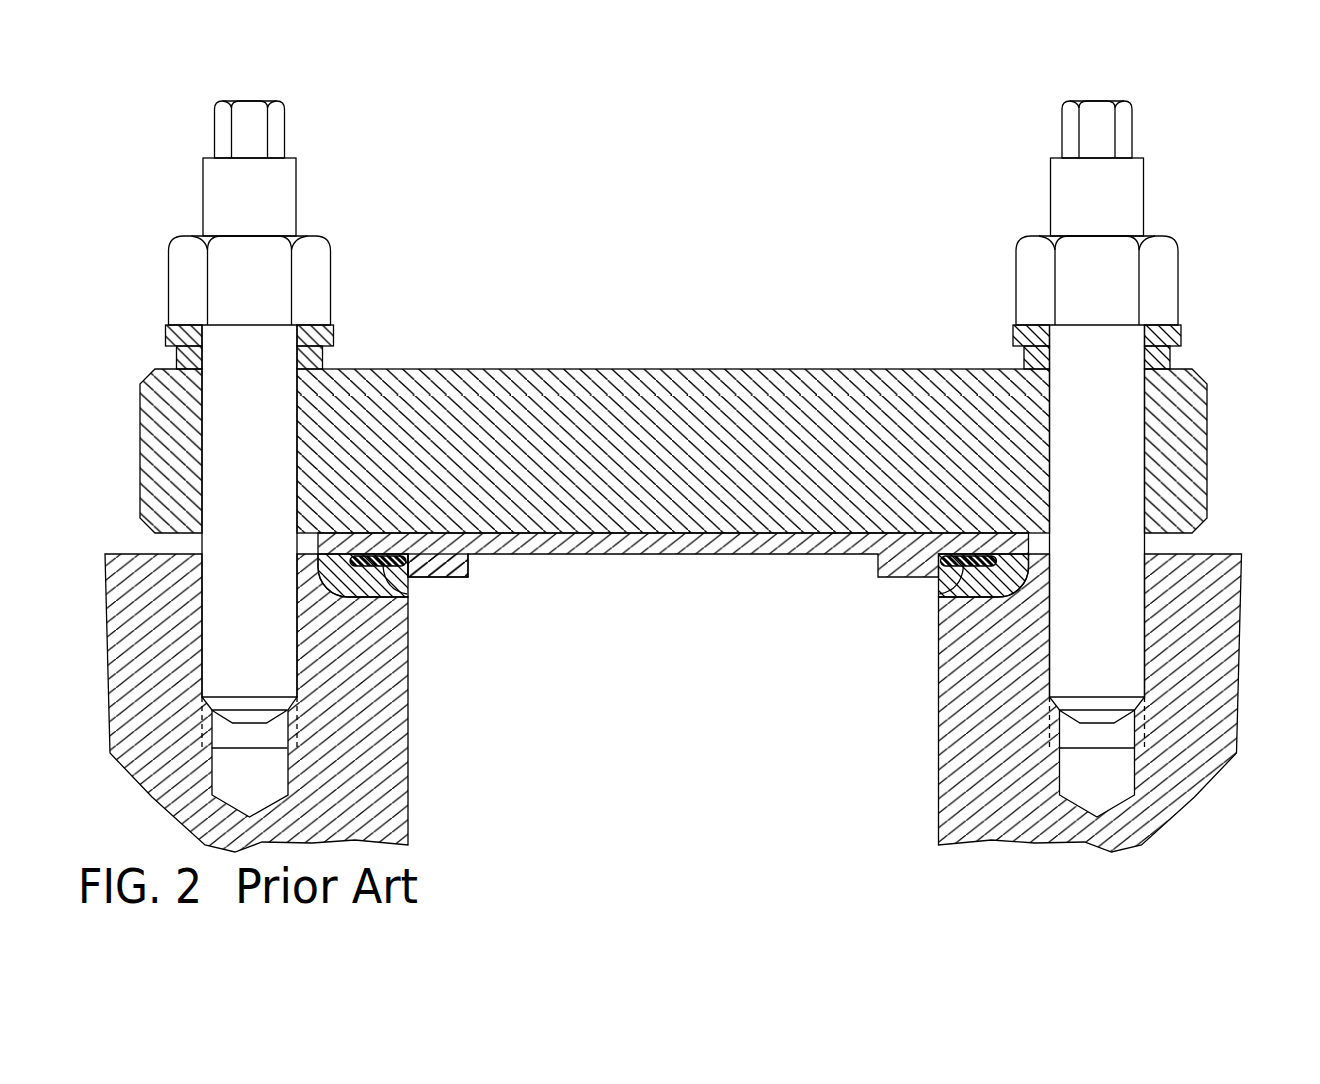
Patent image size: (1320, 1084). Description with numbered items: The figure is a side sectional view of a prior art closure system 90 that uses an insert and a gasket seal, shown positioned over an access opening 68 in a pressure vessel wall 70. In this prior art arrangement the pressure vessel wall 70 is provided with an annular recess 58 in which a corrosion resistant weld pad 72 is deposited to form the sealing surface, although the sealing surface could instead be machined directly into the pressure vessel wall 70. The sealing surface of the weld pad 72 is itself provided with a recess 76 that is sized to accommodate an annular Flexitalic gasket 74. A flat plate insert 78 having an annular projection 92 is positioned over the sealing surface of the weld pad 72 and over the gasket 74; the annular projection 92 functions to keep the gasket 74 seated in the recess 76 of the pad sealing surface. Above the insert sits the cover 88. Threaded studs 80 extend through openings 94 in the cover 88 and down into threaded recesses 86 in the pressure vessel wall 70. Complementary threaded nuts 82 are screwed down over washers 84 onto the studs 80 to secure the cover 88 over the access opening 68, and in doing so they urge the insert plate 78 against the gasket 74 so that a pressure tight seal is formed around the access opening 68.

The prior art closure system 90 is at (600, 243).
The cover 88 is at (760, 368).
The openings 94 is at (1147, 475).
The threaded studs 80 is at (1142, 212).
The threaded nuts 82 is at (1170, 292).
The washers 84 is at (1170, 360).
The threaded recesses 86 is at (1127, 738).
The pressure vessel wall 70 is at (410, 740).
The flat plate insert 78 is at (675, 557).
The annular projection 92 is at (468, 565).
The corrosion resistant weld pad 72 is at (408, 595).
The annular Flexitalic gasket 74 is at (987, 600).
The recess 76 is at (960, 562).
The annular recess 58 is at (1005, 590).
The access opening 68 is at (684, 716).